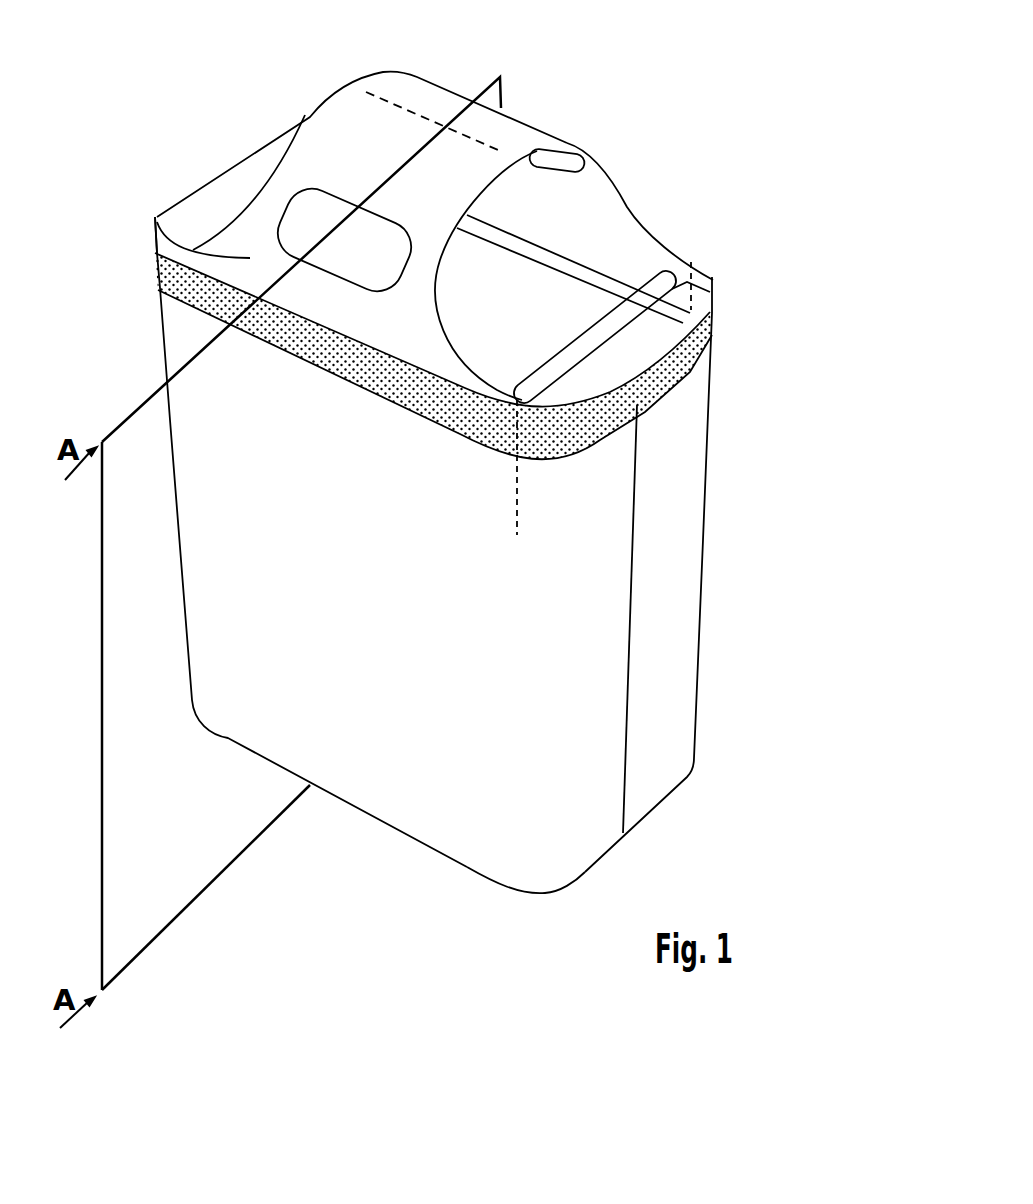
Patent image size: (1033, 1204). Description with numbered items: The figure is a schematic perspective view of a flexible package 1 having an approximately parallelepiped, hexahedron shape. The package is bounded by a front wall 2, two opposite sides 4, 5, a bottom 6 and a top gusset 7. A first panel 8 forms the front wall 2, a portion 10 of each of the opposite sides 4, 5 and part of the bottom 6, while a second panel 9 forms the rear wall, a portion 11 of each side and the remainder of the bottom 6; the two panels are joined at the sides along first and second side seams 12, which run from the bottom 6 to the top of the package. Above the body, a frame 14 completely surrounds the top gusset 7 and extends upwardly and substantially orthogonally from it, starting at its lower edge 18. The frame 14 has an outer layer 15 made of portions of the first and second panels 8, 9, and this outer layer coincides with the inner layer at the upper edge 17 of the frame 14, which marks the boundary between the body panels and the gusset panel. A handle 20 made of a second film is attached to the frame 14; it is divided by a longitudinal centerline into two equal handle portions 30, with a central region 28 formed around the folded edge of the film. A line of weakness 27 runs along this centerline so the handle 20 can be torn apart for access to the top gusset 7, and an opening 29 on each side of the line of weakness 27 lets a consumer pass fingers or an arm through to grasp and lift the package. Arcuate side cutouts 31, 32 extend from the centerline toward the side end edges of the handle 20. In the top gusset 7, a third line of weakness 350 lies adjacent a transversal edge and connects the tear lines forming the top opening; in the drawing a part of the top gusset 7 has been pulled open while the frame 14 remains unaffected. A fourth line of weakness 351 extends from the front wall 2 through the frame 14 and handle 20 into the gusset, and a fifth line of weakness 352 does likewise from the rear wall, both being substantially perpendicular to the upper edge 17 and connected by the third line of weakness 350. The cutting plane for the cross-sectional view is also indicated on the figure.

The flexible package 1 is at (172, 540).
The front wall 2 is at (392, 651).
The side 4 is at (655, 670).
The side 5 is at (142, 327).
The bottom 6 is at (385, 828).
The top gusset 7 is at (509, 324).
The first panel 8 is at (303, 600).
The second panel 9 is at (715, 475).
The portion of the sides 10 is at (602, 679).
The portion of the sides 11 is at (674, 622).
The side seam 12 is at (636, 525).
The frame 14 is at (678, 366).
The outer layer 15 is at (373, 373).
The upper edge 17 is at (297, 313).
The lower edge 18 is at (403, 410).
The handle 20 is at (572, 104).
The line of weakness 27 is at (372, 93).
The central region 28 is at (450, 107).
The opening 29 is at (258, 212).
The handle portion 30 is at (160, 213).
The side cutout 31 is at (627, 192).
The side cutout 32 is at (297, 115).
The third line of weakness 350 is at (600, 305).
The fourth line of weakness 351 is at (518, 530).
The fifth line of weakness 352 is at (693, 282).